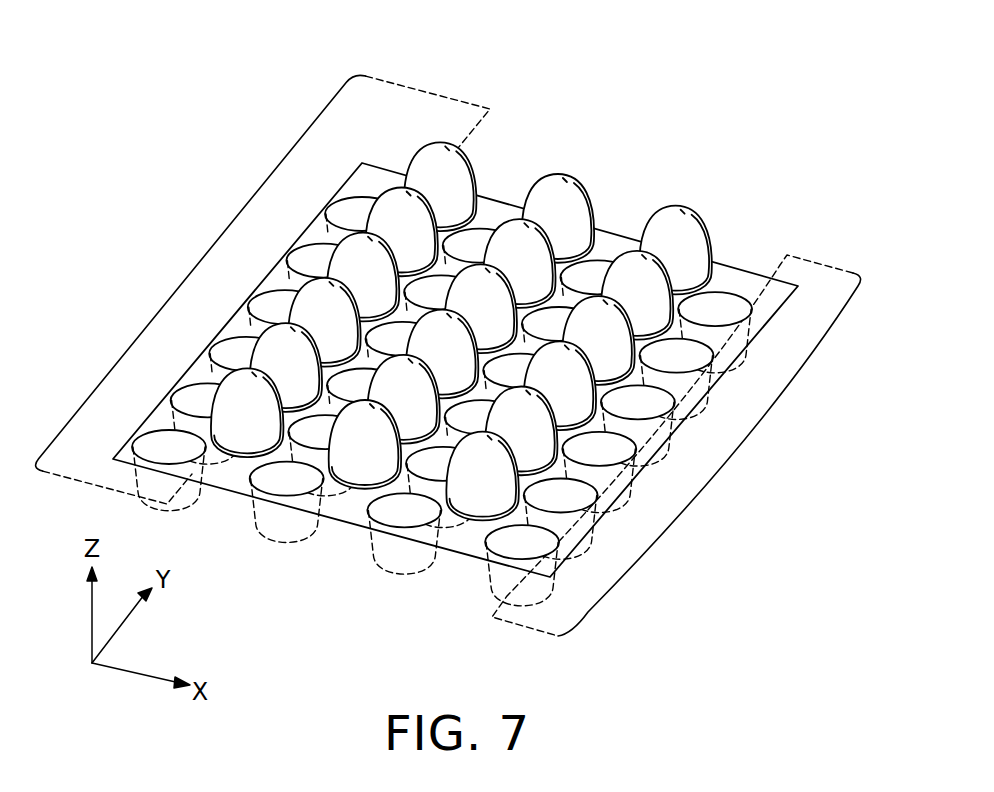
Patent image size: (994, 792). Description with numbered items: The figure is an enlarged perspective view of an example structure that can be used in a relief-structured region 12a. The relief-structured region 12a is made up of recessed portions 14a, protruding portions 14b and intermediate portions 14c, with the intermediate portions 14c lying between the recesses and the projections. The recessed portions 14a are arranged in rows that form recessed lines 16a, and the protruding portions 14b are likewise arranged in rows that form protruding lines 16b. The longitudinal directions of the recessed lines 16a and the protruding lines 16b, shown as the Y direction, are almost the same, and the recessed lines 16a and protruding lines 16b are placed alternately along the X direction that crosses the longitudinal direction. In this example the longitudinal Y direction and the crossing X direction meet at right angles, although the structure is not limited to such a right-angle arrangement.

The relief-structured region 12a is at (592, 107).
The recessed portion 14a is at (727, 297).
The protruding portion 14b is at (668, 217).
The intermediate portion 14c is at (495, 207).
The recessed line 16a is at (740, 446).
The protruding line 16b is at (211, 247).